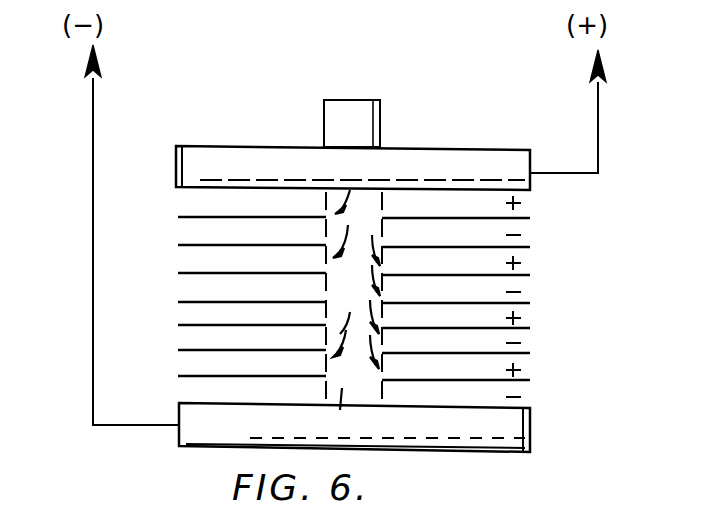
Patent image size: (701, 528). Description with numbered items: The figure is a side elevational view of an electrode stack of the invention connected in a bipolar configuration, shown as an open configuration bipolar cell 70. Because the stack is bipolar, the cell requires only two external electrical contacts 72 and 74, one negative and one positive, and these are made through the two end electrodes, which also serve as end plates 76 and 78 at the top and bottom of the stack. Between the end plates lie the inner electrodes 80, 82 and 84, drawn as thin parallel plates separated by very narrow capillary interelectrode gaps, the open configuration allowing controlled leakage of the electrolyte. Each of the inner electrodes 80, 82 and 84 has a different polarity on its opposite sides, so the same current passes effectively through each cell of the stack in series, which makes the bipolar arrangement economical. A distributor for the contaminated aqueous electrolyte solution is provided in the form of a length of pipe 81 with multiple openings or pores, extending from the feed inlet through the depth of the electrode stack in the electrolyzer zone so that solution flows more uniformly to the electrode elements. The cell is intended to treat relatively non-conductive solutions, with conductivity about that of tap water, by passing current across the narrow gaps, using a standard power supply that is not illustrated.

The open configuration bipolar cell 70 is at (576, 224).
The external electrical contact 72 is at (93, 190).
The external electrical contact 74 is at (598, 128).
The end electrode/end plate 76 is at (278, 146).
The end electrode/end plate 78 is at (530, 427).
The inner electrode 80 is at (180, 242).
The length of pipe 81 is at (380, 230).
The inner electrode 82 is at (525, 304).
The inner electrode 84 is at (178, 350).